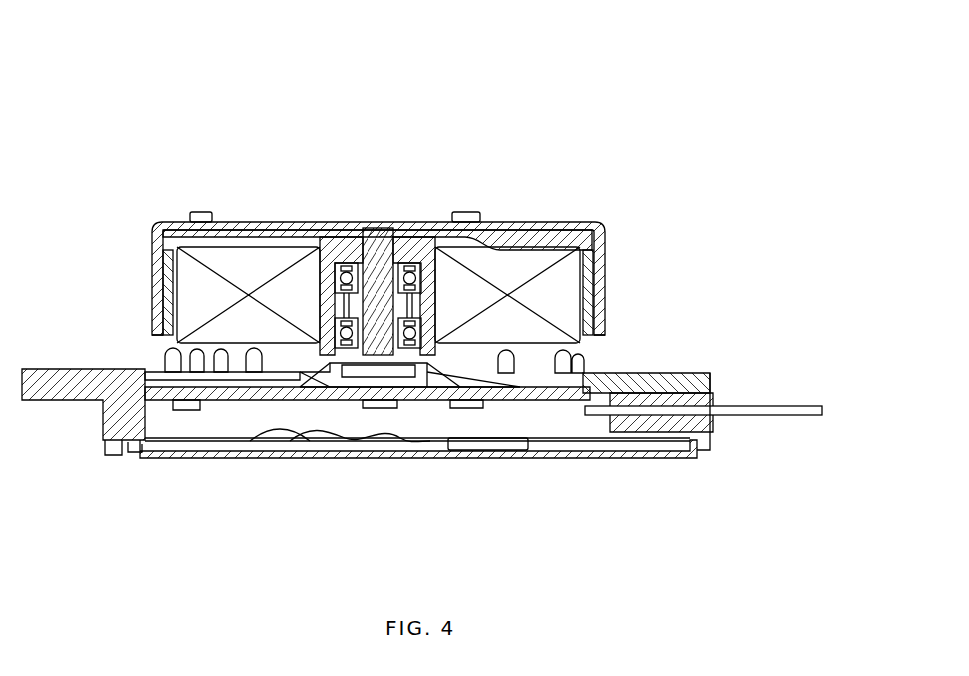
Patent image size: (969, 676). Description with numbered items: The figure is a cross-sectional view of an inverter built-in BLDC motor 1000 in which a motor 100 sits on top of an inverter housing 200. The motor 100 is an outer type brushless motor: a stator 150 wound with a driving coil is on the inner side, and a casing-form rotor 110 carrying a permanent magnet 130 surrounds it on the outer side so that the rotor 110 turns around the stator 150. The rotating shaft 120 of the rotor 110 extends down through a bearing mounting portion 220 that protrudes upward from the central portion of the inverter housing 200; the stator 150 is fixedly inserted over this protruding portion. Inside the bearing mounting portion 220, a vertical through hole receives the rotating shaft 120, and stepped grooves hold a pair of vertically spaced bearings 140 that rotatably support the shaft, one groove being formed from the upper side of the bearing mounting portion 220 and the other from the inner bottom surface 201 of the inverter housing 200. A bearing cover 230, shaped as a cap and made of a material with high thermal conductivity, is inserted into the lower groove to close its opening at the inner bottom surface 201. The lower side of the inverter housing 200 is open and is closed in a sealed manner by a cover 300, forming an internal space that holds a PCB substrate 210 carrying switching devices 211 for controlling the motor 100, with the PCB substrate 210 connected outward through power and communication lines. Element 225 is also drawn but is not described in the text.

The inverter built-in BLDC motor 1000 is at (487, 118).
The motor 100 is at (571, 205).
The rotor 110 is at (600, 215).
The rotating shaft 120 is at (383, 233).
The permanent magnet 130 is at (595, 262).
The bearing 140 is at (414, 260).
The stator 150 is at (570, 292).
The inverter housing 200 is at (105, 423).
The inner bottom surface 201 is at (183, 440).
The PCB substrate 210 is at (236, 441).
The switching devices 211 is at (300, 441).
The bearing mounting portion 220 is at (466, 240).
The sensor 225 is at (446, 441).
The bearing cover 230 is at (362, 441).
The cover 300 is at (556, 460).